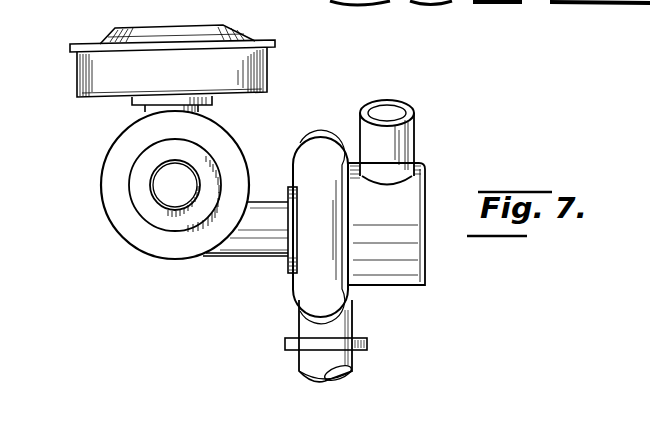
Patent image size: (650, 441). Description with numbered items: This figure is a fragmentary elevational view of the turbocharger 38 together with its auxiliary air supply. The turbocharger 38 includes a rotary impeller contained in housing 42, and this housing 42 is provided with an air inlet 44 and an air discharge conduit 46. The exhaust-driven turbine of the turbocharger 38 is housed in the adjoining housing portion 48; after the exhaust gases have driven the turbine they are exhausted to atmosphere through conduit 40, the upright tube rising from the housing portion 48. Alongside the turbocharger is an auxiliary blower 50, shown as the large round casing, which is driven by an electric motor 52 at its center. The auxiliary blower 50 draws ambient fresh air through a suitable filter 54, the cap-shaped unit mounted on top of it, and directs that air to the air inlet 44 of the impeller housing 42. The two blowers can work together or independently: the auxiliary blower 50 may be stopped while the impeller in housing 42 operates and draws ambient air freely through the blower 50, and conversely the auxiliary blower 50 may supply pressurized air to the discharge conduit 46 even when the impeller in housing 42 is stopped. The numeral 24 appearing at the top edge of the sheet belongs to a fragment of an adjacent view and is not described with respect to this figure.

The component of adjacent figure 24 is at (536, 2).
The turbocharger 38 is at (319, 118).
The conduit 40 is at (413, 130).
The housing 42 is at (312, 155).
The air inlet 44 is at (287, 238).
The air discharge conduit 46 is at (300, 358).
The housing portion 48 is at (422, 197).
The auxiliary blower 50 is at (102, 186).
The electric motor 52 is at (162, 178).
The filter 54 is at (93, 60).